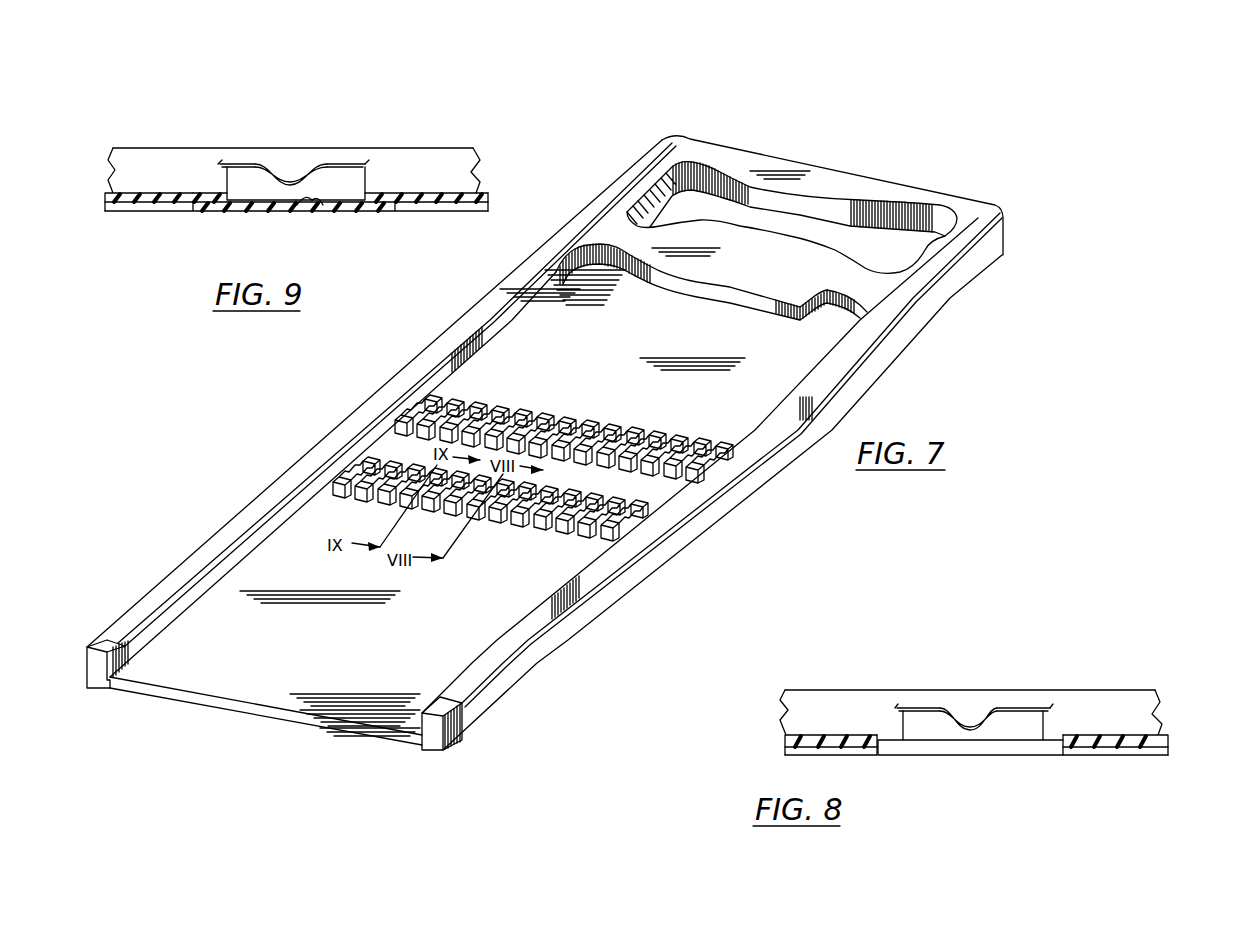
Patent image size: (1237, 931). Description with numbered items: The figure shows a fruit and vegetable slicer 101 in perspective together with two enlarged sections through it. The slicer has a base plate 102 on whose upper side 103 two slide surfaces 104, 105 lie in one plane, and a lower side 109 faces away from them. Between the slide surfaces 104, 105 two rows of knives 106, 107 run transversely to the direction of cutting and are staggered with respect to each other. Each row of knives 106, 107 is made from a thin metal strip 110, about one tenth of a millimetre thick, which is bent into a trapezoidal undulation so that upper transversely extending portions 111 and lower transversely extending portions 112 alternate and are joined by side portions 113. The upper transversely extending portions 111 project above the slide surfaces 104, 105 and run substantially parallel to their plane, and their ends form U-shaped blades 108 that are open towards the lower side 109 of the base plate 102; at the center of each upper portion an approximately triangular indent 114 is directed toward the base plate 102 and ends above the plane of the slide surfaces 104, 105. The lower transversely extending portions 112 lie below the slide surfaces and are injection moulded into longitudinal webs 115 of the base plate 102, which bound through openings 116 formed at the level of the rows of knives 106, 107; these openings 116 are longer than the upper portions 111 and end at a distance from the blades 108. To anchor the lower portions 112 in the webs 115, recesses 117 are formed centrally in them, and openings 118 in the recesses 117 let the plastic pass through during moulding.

In FIG. 7, the fruit and vegetable slicer 101 is at (875, 400).
In FIG. 8, the fruit and vegetable slicer 101 is at (1161, 706).
In FIG. 9, the fruit and vegetable slicer 101 is at (495, 191).
In FIG. 7, the base plate 102 is at (572, 334).
In FIG. 9, the base plate 102 is at (418, 187).
In FIG. 8, the upper side 103 is at (845, 735).
In FIG. 9, the upper side 103 is at (171, 175).
In FIG. 7, the slide surface 104 is at (820, 340).
In FIG. 8, the slide surface 104 is at (1130, 735).
In FIG. 9, the slide surface 104 is at (457, 191).
In FIG. 7, the slide surface 105 is at (437, 672).
In FIG. 8, the slide surface 105 is at (812, 733).
In FIG. 9, the slide surface 105 is at (135, 190).
In FIG. 7, the row of knives 106 is at (539, 446).
In FIG. 7, the row of knives 107 is at (647, 523).
In FIG. 8, the row of knives 107 is at (999, 711).
In FIG. 9, the row of knives 107 is at (305, 178).
In FIG. 7, the U-shaped blade 108 is at (650, 430).
In FIG. 8, the U-shaped blade 108 is at (895, 708).
In FIG. 9, the U-shaped blade 108 is at (225, 165).
In FIG. 8, the lower side 109 is at (1115, 757).
In FIG. 9, the lower side 109 is at (440, 211).
In FIG. 7, the metal strip 110 is at (425, 407).
In FIG. 8, the metal strip 110 is at (1015, 728).
In FIG. 9, the metal strip 110 is at (333, 172).
In FIG. 7, the upper transversely extending portion 111 is at (527, 412).
In FIG. 8, the upper transversely extending portion 111 is at (938, 708).
In FIG. 9, the upper transversely extending portion 111 is at (245, 165).
In FIG. 7, the lower transversely extending portion 112 is at (393, 430).
In FIG. 8, the lower transversely extending portion 112 is at (940, 745).
In FIG. 9, the lower transversely extending portion 112 is at (345, 205).
In FIG. 7, the side portion 113 is at (583, 417).
In FIG. 8, the side portion 113 is at (920, 735).
In FIG. 9, the side portion 113 is at (245, 190).
In FIG. 7, the indent 114 is at (603, 433).
In FIG. 8, the indent 114 is at (968, 725).
In FIG. 9, the indent 114 is at (290, 178).
In FIG. 9, the longitudinal web 115 is at (272, 208).
In FIG. 7, the through opening 116 is at (627, 490).
In FIG. 8, the through opening 116 is at (970, 757).
In FIG. 9, the recess 117 is at (320, 201).
In FIG. 9, the opening 118 is at (303, 206).